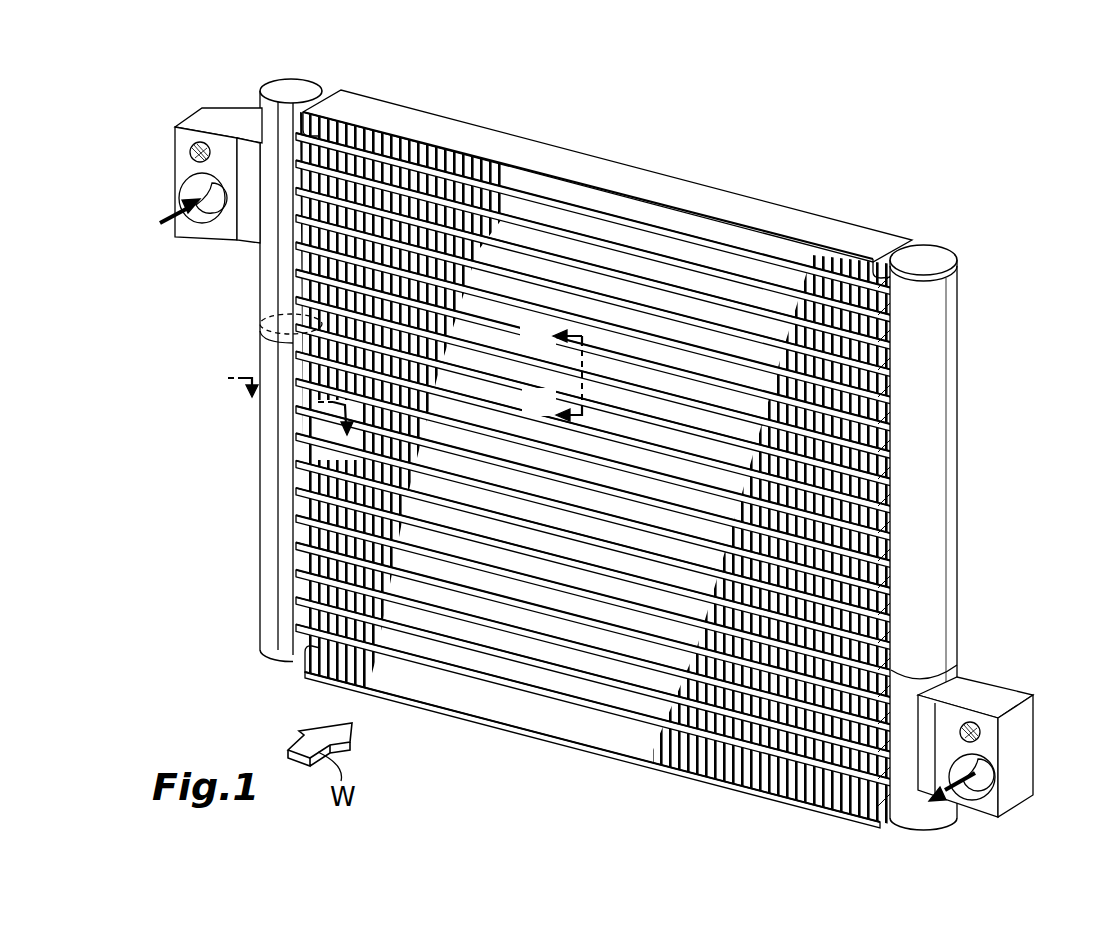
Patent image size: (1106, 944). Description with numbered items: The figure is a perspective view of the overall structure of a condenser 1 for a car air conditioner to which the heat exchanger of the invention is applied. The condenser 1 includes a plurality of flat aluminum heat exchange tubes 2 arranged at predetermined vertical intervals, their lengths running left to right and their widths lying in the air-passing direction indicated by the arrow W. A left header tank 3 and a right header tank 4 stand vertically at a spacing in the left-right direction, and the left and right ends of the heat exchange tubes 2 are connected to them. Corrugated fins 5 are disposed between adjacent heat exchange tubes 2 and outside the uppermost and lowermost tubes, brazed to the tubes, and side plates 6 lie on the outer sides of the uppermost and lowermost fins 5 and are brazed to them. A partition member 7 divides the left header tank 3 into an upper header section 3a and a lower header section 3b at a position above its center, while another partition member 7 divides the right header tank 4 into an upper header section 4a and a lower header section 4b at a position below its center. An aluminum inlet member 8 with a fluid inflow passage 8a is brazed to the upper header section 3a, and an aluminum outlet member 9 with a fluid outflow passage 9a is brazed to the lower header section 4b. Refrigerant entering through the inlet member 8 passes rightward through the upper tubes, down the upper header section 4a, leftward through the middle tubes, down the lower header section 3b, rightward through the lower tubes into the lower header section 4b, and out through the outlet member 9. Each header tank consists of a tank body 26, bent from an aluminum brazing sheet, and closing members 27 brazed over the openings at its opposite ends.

The condenser 1 is at (797, 190).
The heat exchange tubes 2 is at (655, 250).
The left header tank 3 is at (610, 445).
The upper header section 3a is at (262, 270).
The lower header section 3b is at (262, 568).
The right header tank 4 is at (968, 555).
The upper header section 4a is at (932, 452).
The lower header section 4b is at (948, 818).
The corrugated fins 5 is at (482, 225).
The side plates 6 is at (724, 197).
The partition member 7 is at (262, 318).
The inlet member 8 is at (179, 175).
The fluid inflow passage 8a is at (186, 205).
The outlet member 9 is at (1005, 756).
The fluid outflow passage 9a is at (985, 770).
The tank body 26 is at (262, 503).
The closing members 27 is at (262, 88).